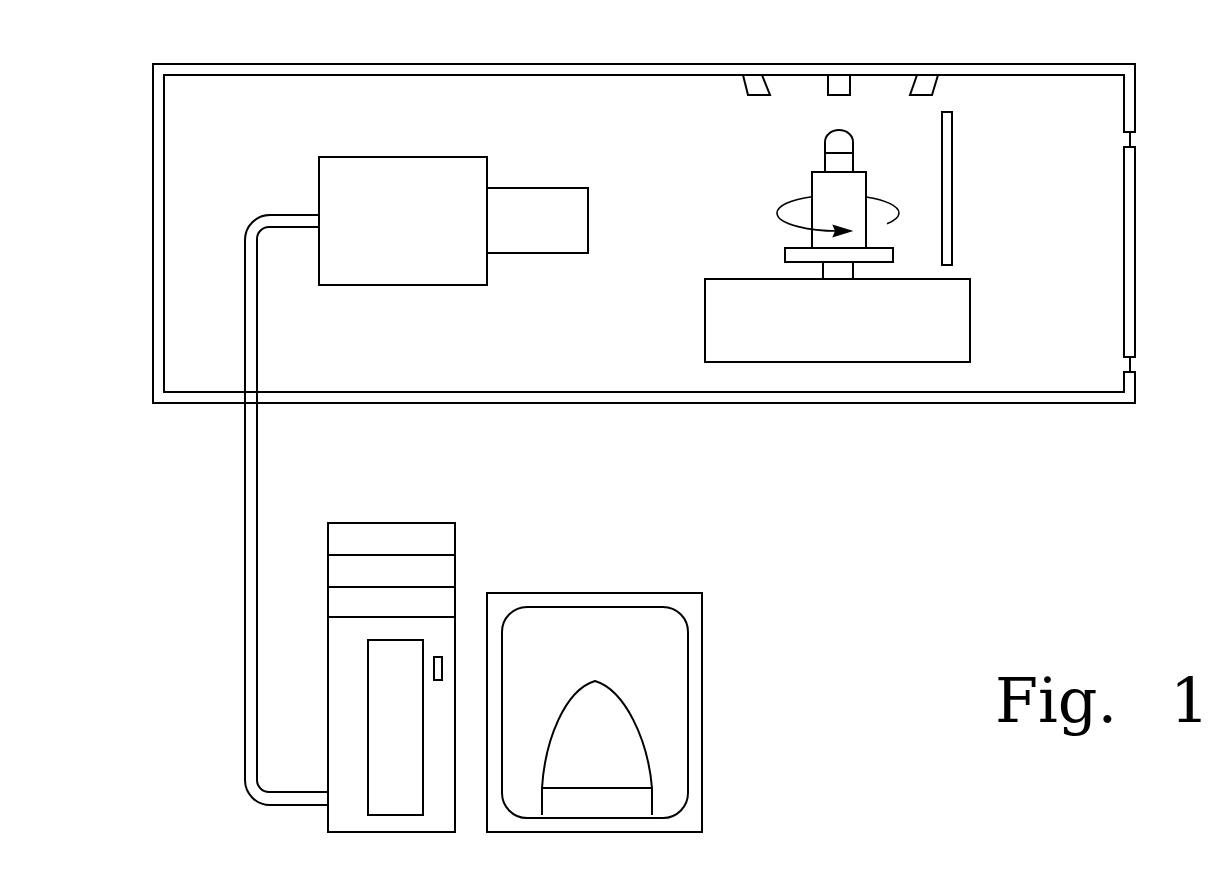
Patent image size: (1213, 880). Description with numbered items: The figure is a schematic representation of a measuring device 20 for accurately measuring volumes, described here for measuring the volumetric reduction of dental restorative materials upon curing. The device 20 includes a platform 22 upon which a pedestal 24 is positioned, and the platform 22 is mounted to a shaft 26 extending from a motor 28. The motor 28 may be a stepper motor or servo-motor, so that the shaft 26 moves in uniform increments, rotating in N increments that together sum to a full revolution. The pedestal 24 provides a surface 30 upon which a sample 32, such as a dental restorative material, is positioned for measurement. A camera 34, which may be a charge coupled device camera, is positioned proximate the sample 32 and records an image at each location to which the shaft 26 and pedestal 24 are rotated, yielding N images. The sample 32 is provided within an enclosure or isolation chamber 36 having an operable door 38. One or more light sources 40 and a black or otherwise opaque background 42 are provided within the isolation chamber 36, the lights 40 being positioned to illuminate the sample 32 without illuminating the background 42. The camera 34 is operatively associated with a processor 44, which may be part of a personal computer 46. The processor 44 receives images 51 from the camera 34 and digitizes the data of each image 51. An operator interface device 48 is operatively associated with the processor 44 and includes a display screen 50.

The measuring device 20 is at (874, 528).
The platform 22 is at (790, 248).
The pedestal 24 is at (857, 216).
The shaft 26 is at (838, 278).
The motor 28 is at (812, 372).
The surface 30 is at (845, 164).
The sample 32 is at (848, 140).
The camera 34 is at (446, 266).
The isolation chamber 36 is at (1047, 400).
The door 38 is at (1132, 225).
The light sources 40 is at (752, 79).
The background 42 is at (950, 190).
The processor 44 is at (436, 668).
The personal computer 46 is at (450, 570).
The operator interface device 48 is at (693, 625).
The display screen 50 is at (668, 715).
The images 51 is at (246, 552).